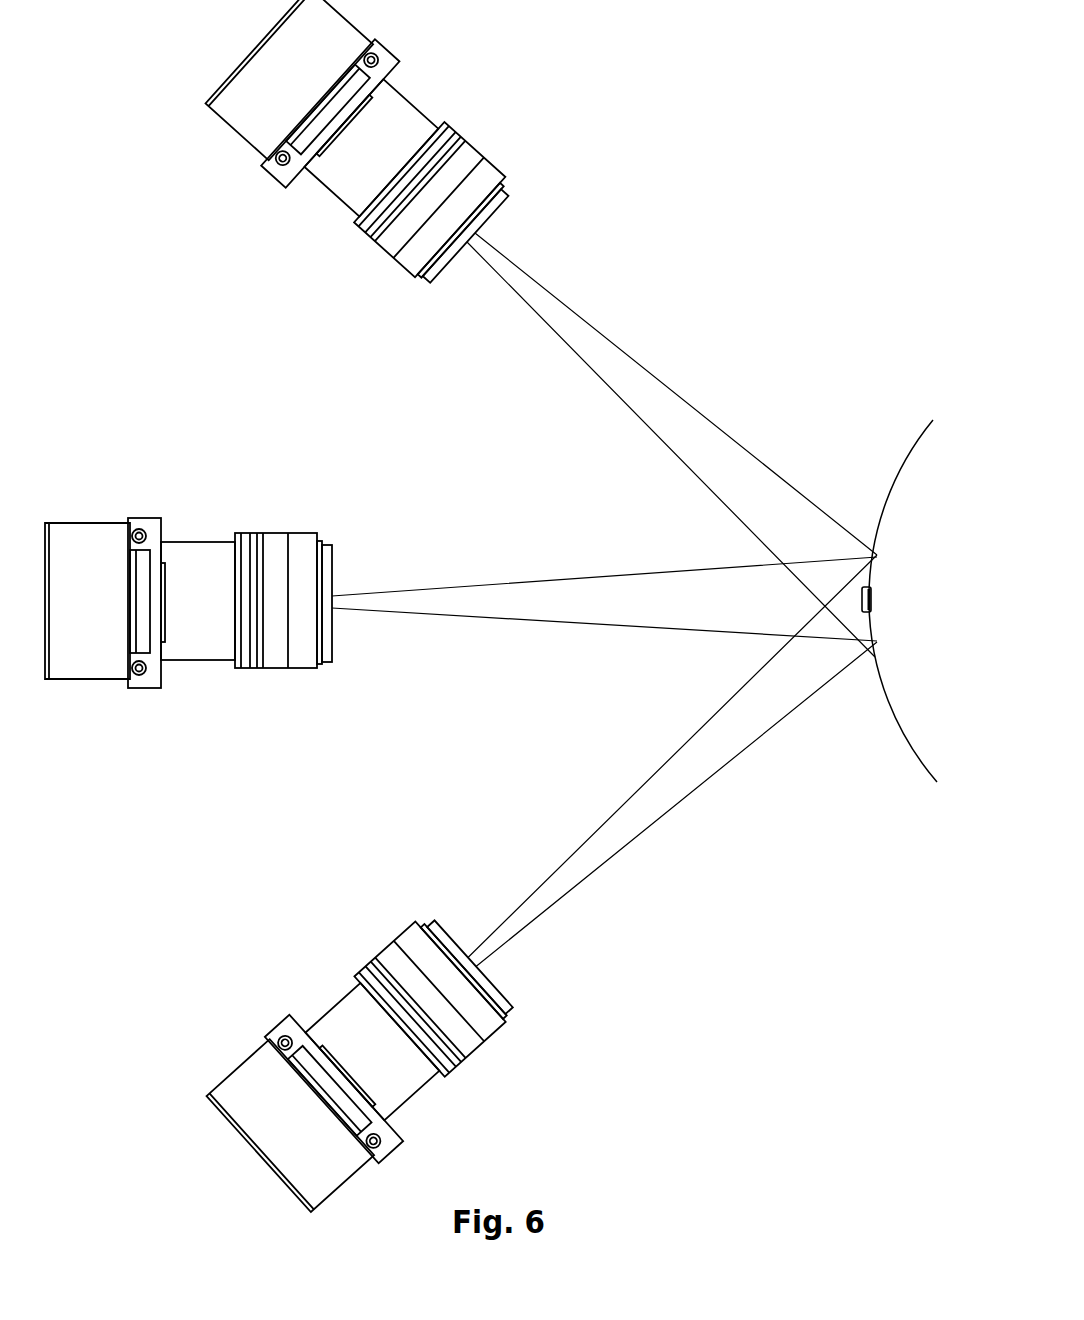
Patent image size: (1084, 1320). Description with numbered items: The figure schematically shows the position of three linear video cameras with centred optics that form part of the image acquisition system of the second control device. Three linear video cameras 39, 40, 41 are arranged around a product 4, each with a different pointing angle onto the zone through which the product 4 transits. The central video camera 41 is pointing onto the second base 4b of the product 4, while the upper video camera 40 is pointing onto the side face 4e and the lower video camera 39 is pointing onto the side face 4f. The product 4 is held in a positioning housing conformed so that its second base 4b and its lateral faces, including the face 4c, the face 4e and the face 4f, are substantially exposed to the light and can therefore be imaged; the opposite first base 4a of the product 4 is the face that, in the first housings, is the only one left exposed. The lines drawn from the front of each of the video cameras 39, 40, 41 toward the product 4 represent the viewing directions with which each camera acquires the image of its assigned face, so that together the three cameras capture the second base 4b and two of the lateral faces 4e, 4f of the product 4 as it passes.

The product 4 is at (859, 632).
The first base 4a is at (873, 605).
The second base 4b is at (862, 598).
The lateral face 4c is at (872, 600).
The lateral face 4e is at (868, 587).
The lateral face 4f is at (870, 617).
The linear video camera 39 is at (450, 1022).
The linear video camera 40 is at (462, 172).
The linear video camera 41 is at (303, 567).